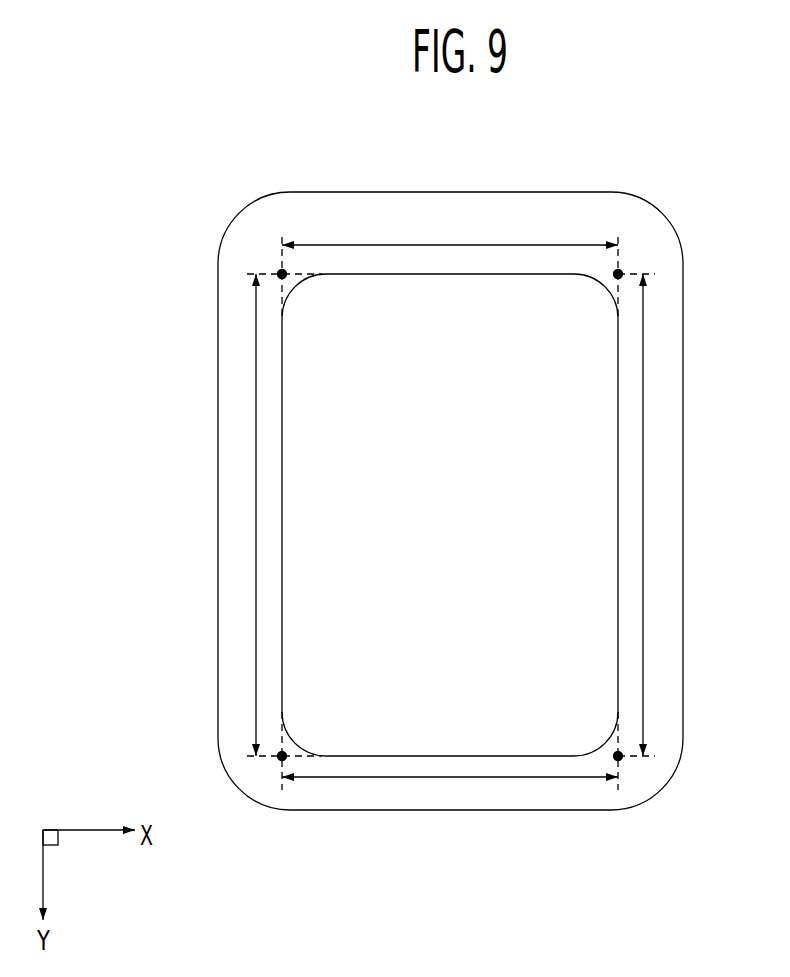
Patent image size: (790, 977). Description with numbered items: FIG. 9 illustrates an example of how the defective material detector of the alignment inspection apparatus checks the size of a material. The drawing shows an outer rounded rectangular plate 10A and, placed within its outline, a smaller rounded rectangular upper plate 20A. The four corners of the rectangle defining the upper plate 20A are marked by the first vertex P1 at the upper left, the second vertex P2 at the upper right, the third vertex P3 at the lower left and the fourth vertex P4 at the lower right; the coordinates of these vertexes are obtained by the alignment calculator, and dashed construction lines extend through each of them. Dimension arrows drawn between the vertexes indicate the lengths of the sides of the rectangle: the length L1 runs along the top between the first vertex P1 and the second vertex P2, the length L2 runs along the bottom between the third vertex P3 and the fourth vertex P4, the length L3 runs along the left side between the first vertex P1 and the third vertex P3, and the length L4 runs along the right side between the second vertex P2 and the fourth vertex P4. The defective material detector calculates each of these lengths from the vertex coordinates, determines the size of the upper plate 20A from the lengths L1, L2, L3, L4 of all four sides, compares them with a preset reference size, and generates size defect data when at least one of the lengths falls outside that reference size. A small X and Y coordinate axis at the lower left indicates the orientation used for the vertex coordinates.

The lower plate 10A is at (441, 192).
The upper plate 20A is at (488, 274).
The first vertex P1 is at (282, 274).
The second vertex P2 is at (618, 274).
The third vertex P3 is at (282, 756).
The fourth vertex P4 is at (618, 756).
The length L1 is at (450, 234).
The length L2 is at (450, 793).
The length L3 is at (244, 515).
The length L4 is at (657, 515).